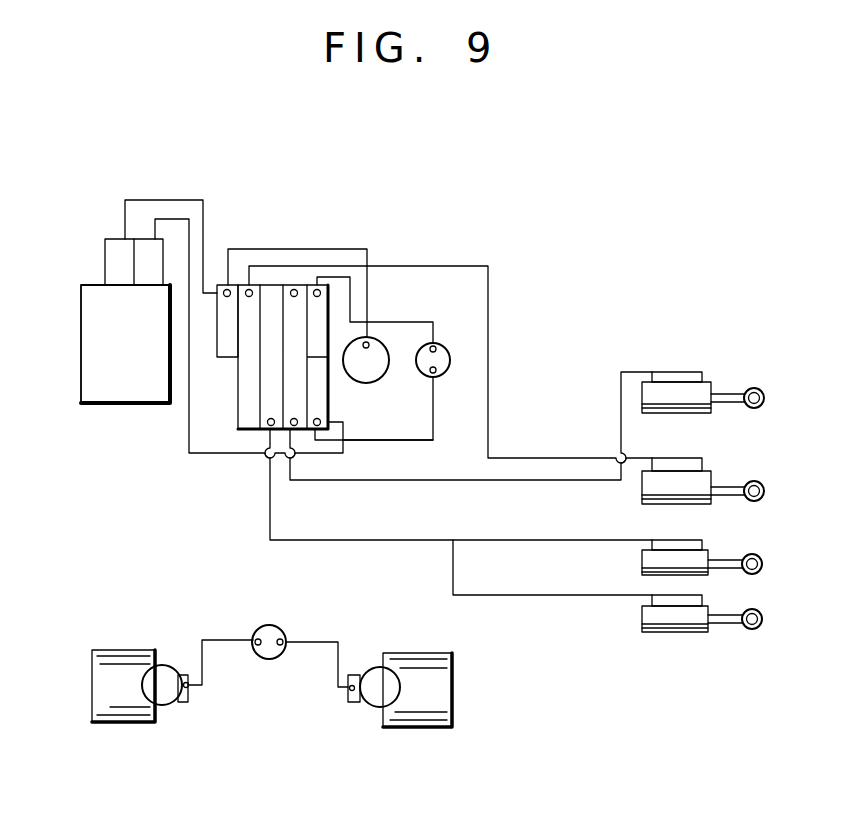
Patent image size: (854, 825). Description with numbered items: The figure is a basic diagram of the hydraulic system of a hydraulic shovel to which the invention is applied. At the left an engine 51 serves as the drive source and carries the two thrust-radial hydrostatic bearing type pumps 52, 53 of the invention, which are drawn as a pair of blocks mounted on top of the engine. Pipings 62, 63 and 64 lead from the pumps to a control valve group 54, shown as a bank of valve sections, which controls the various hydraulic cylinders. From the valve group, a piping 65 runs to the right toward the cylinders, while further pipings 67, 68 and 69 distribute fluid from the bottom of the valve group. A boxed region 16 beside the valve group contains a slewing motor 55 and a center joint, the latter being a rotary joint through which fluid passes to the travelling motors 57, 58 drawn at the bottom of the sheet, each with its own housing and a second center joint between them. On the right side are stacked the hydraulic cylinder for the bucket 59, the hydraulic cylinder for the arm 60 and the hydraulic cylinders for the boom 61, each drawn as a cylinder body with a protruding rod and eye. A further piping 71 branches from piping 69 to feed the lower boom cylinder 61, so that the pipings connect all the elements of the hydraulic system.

The control unit 16 is at (417, 322).
The engine 51 is at (122, 392).
The thrust-radial hydrostatic bearing type pump 52 is at (112, 258).
The thrust-radial hydrostatic bearing type pump 53 is at (147, 247).
The control valve group 54 is at (280, 285).
The slewing motor 55 is at (388, 368).
The travelling motor 57 is at (168, 710).
The travelling motor 58 is at (372, 713).
The hydraulic cylinder for bucket 59 is at (680, 372).
The hydraulic cylinder for arm 60 is at (640, 500).
The hydraulic cylinder for boom 61 is at (642, 570).
The piping 62 is at (172, 218).
The piping 63 is at (195, 200).
The piping 64 is at (273, 248).
The piping 65 is at (462, 266).
The piping 67 is at (415, 443).
The piping 68 is at (353, 480).
The piping 69 is at (523, 543).
The conduit 71 is at (517, 597).